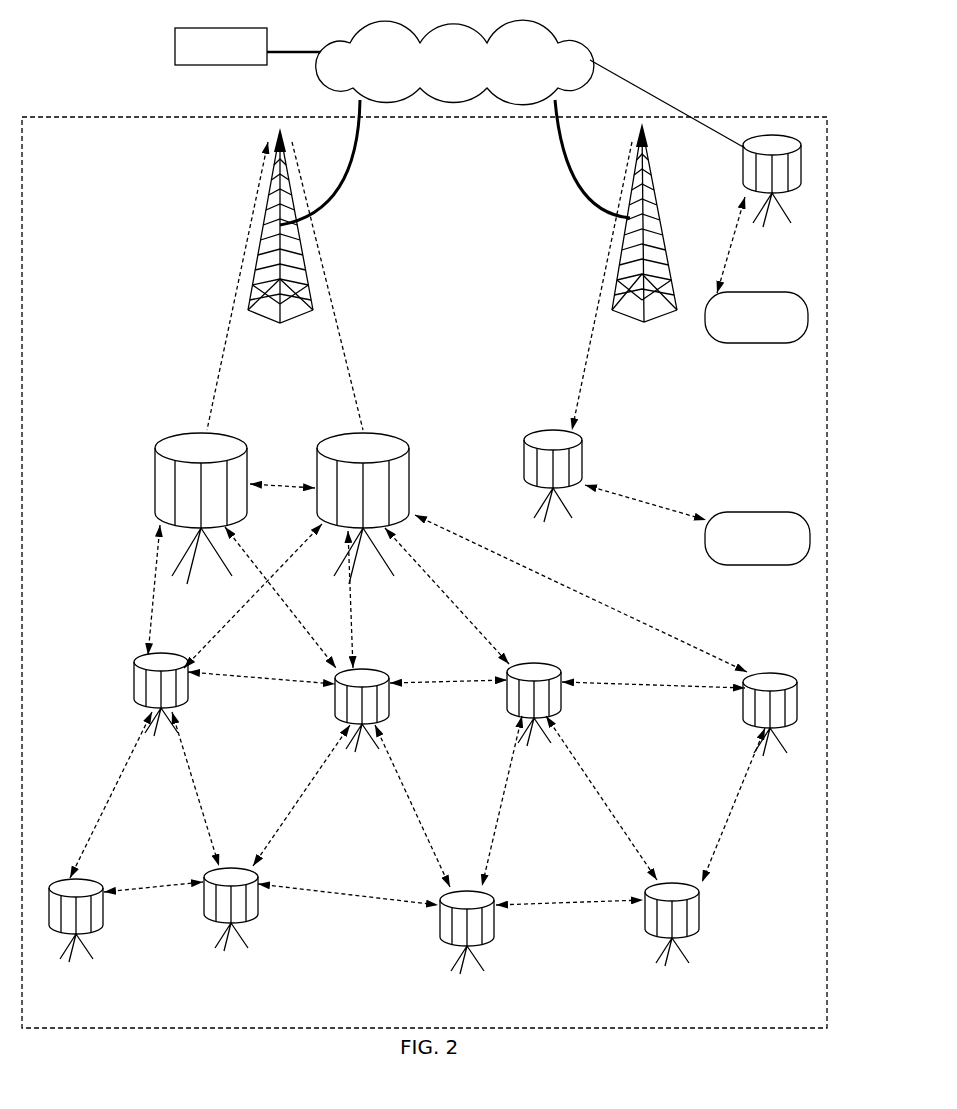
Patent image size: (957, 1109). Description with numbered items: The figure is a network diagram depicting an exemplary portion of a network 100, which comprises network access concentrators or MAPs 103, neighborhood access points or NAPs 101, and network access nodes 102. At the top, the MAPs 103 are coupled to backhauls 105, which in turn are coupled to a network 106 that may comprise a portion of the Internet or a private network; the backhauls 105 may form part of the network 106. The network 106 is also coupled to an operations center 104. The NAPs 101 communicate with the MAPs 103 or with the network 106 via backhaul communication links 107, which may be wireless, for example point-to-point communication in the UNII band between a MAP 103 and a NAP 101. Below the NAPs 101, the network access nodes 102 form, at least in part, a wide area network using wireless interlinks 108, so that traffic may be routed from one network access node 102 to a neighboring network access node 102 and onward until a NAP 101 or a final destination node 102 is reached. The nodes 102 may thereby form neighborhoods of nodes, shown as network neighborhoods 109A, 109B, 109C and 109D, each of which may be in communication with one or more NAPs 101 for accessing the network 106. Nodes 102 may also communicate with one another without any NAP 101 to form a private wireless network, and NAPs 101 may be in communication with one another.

The network 100 is at (130, 116).
The network access point (NAP) 101 is at (478, 360).
The network access node 102 is at (423, 826).
The network access concentrator (MAP) 103 is at (462, 234).
The operations center 104 is at (247, 46).
The backhaul 105 is at (592, 192).
The network 106 is at (530, 84).
The backhaul communication link 107 is at (584, 373).
The wireless interlink 108 is at (150, 588).
The network neighborhood 109A is at (72, 665).
The network neighborhood 109B is at (373, 972).
The network neighborhood 109C is at (697, 525).
The network neighborhood 109D is at (756, 270).